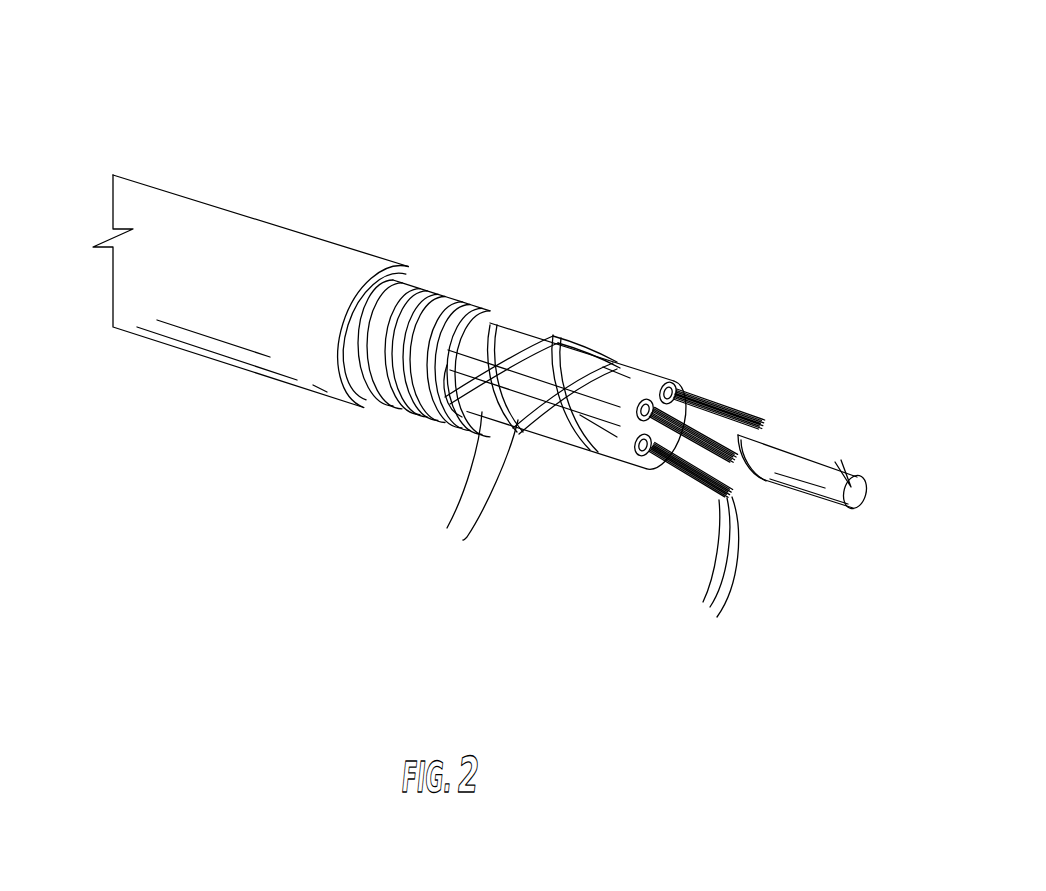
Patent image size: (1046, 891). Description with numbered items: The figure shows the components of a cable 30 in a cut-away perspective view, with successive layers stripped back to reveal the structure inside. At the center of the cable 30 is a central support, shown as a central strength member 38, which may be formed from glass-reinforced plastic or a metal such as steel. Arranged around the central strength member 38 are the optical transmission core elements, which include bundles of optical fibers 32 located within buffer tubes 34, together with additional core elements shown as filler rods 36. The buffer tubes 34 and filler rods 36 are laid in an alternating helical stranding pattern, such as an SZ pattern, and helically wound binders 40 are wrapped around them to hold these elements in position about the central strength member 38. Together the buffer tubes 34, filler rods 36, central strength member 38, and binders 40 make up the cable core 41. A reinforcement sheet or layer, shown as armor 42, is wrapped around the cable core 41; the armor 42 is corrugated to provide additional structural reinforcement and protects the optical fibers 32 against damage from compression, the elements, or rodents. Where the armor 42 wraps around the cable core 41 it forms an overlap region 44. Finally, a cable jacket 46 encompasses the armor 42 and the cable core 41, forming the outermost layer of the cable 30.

The cable 30 is at (417, 126).
The optical fibers 32 is at (717, 617).
The buffer tubes 34 is at (608, 390).
The filler rods 36 is at (640, 468).
The central strength member 38 is at (808, 453).
The binders 40 is at (475, 488).
The cable core 41 is at (586, 344).
The armor 42 is at (433, 287).
The overlap region 44 is at (495, 313).
The cable jacket 46 is at (255, 218).